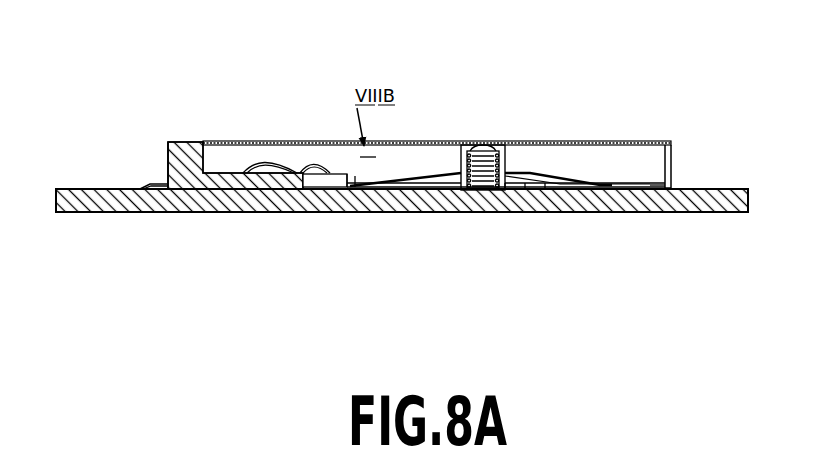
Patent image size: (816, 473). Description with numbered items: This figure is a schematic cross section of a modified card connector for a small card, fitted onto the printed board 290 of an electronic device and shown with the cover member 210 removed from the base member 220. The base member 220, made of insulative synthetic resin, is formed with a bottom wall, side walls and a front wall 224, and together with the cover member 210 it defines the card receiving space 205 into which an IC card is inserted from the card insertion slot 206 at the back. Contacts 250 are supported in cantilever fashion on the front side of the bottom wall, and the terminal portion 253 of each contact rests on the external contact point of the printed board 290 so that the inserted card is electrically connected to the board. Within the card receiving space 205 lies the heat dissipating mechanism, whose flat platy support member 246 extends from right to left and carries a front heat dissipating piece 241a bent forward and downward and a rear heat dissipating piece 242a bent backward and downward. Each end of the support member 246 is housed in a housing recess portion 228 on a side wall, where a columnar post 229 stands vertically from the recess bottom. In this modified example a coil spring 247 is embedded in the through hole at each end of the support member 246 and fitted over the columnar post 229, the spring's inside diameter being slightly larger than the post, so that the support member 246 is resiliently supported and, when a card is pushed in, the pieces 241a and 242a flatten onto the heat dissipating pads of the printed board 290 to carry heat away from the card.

The card receiving space 205 is at (523, 150).
The card insertion slot 206 is at (676, 160).
The cover member 210 is at (322, 138).
The base member 220 is at (164, 152).
The front wall 224 is at (188, 177).
The housing recess portion 228 is at (494, 146).
The columnar post 229 is at (470, 146).
The front heat dissipating piece 241a is at (440, 182).
The rear heat dissipating piece 242a is at (565, 183).
The support member 246 is at (486, 190).
The coil spring 247 is at (461, 150).
The contacts 250 is at (277, 152).
The terminal portion 253 is at (152, 184).
The printed board 290 is at (703, 212).